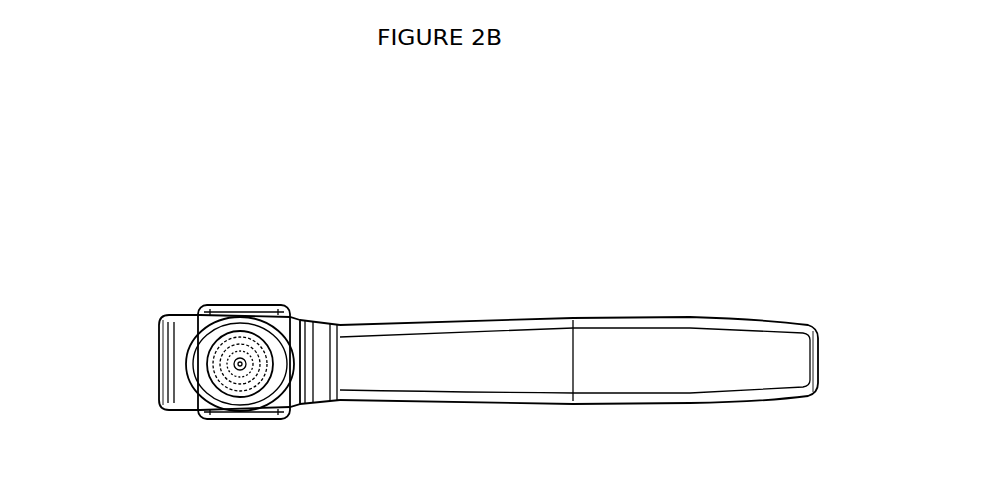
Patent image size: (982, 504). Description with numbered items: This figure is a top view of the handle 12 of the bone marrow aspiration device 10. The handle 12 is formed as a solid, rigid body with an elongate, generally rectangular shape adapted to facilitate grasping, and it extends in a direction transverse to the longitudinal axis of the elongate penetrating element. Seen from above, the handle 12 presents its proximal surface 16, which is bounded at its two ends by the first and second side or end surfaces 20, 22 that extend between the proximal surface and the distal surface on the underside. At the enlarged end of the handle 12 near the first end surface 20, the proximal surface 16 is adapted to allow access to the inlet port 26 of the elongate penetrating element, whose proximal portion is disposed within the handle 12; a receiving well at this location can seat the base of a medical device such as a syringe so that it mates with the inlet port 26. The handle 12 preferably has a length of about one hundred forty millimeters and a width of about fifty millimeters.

The bone marrow aspiration device 10 is at (126, 226).
The handle 12 is at (477, 319).
The proximal surface 16 is at (645, 343).
The first side or end surface 20 is at (146, 364).
The second side or end surface 22 is at (831, 362).
The inlet port 26 is at (238, 333).